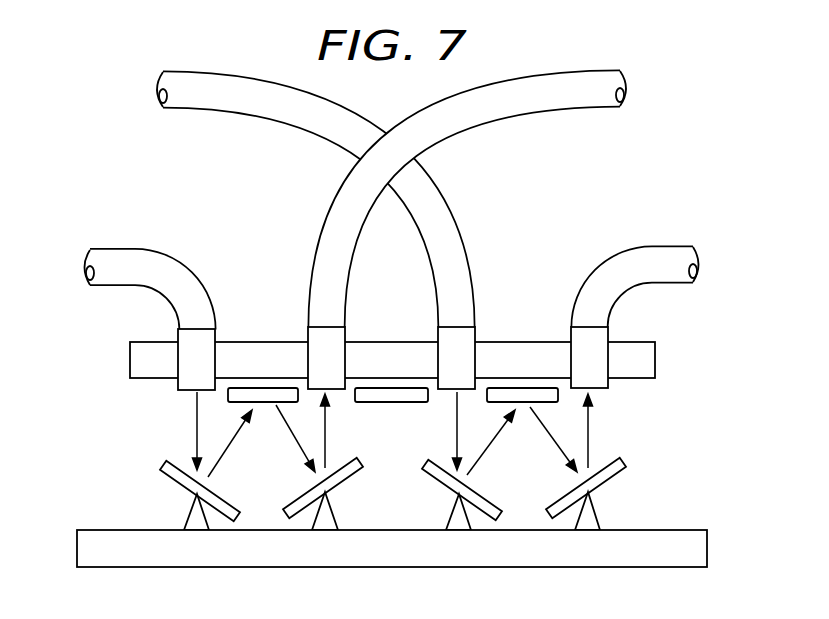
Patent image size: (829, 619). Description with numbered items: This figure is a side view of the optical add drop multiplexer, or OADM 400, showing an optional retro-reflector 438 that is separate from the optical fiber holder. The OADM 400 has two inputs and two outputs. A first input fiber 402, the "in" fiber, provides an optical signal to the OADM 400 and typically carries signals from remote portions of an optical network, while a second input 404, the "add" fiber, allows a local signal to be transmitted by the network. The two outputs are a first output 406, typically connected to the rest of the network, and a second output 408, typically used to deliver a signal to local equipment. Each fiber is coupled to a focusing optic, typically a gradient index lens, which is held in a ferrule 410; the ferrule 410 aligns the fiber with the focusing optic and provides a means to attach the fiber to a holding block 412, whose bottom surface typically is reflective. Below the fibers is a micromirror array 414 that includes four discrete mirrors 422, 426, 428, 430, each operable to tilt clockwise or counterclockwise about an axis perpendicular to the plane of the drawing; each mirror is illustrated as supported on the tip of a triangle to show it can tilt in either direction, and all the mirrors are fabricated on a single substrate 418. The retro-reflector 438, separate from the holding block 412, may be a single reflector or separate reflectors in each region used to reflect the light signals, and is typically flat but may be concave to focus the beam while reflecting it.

The OADM 400 is at (77, 107).
The first input fiber 402 is at (235, 78).
The second input 404 is at (130, 256).
The first output 406 is at (548, 74).
The second output 408 is at (655, 250).
The ferrule 410 is at (182, 337).
The holding block 412 is at (130, 360).
The micromirror array 414 is at (74, 486).
The substrate 418 is at (702, 543).
The mirror 422 is at (512, 485).
The mirror 426 is at (332, 485).
The mirror 428 is at (595, 484).
The mirror 430 is at (190, 487).
The retro-reflector 438 is at (523, 384).